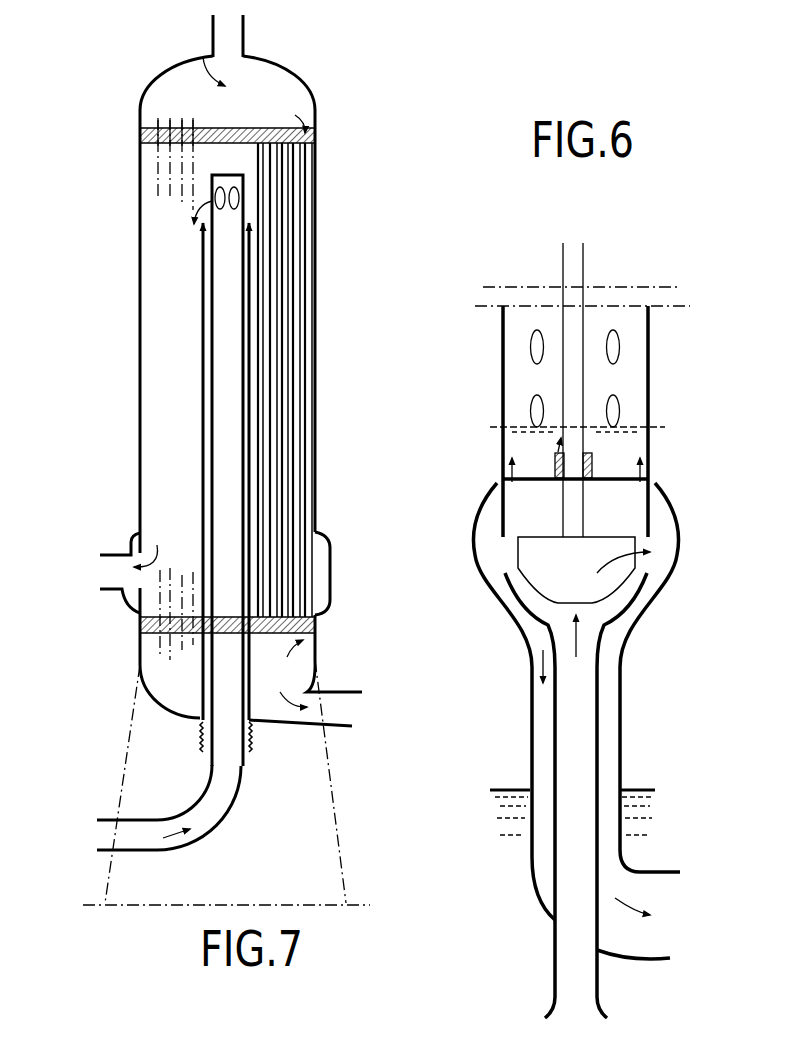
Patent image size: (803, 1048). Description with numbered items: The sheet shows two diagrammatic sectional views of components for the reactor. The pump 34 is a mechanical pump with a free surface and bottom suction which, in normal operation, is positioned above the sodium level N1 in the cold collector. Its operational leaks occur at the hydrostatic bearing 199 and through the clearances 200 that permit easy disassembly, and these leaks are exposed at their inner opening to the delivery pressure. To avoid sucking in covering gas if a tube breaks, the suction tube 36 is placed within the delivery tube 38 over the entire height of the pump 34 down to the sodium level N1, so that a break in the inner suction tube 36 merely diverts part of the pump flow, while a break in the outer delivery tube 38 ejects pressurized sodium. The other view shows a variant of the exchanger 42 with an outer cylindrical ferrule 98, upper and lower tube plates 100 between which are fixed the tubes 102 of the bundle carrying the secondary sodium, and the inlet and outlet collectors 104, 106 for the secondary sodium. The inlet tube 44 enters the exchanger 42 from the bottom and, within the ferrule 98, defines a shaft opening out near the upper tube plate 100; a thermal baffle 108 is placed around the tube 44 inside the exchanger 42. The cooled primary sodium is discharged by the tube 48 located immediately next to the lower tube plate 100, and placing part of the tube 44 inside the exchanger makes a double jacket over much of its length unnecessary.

In FIG. 6, the pump 34 is at (697, 463).
In FIG. 6, the suction tube 36 is at (597, 738).
In FIG. 6, the delivery tube 38 is at (653, 618).
In FIG. 7, the exchanger 42 is at (320, 357).
In FIG. 7, the tube 44 is at (148, 819).
In FIG. 7, the tube 48 is at (112, 549).
In FIG. 7, the outer cylindrical ferrule 98 is at (318, 192).
In FIG. 7, the tube plates 100 is at (247, 128).
In FIG. 7, the tubes 102 is at (295, 264).
In FIG. 7, the inlet collector 104 is at (170, 700).
In FIG. 7, the outlet collector 106 is at (273, 72).
In FIG. 7, the thermal baffle 108 is at (202, 418).
In FIG. 6, the hydrostatic bearing 199 is at (558, 488).
In FIG. 6, the clearances 200 is at (498, 490).
In FIG. 6, the sodium level N1 is at (633, 790).